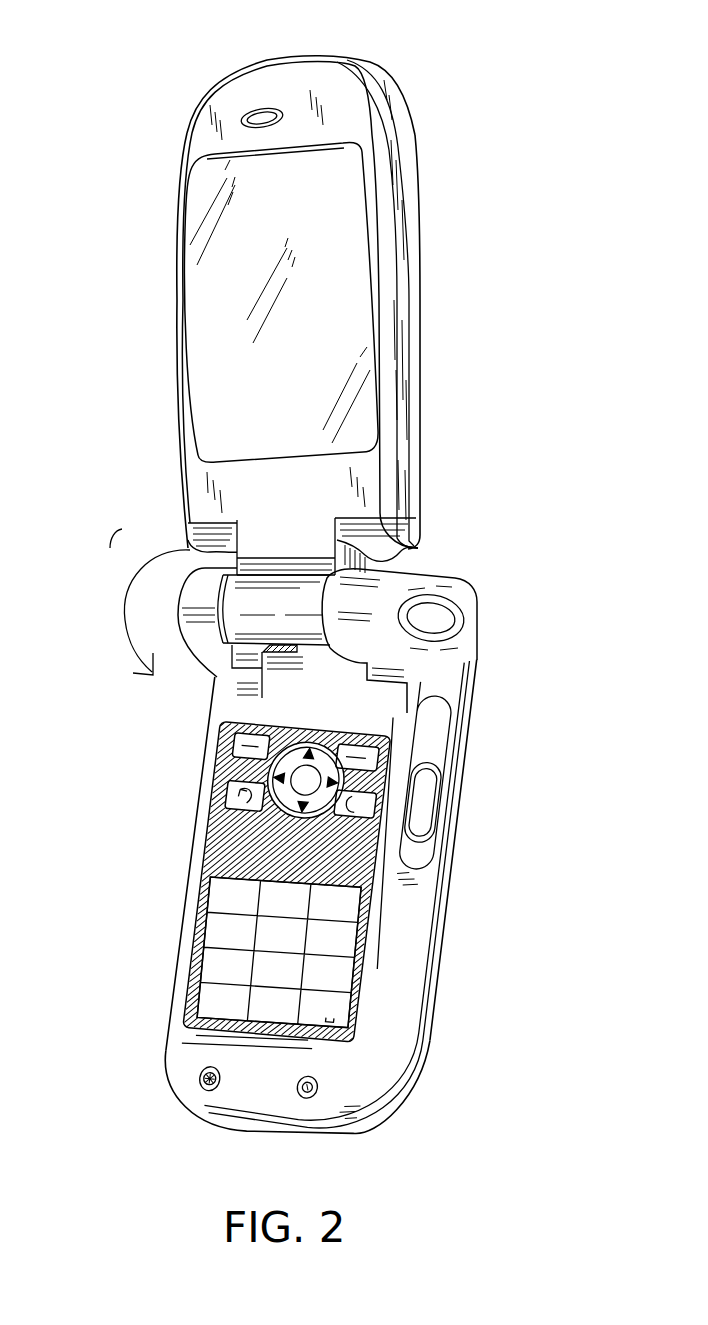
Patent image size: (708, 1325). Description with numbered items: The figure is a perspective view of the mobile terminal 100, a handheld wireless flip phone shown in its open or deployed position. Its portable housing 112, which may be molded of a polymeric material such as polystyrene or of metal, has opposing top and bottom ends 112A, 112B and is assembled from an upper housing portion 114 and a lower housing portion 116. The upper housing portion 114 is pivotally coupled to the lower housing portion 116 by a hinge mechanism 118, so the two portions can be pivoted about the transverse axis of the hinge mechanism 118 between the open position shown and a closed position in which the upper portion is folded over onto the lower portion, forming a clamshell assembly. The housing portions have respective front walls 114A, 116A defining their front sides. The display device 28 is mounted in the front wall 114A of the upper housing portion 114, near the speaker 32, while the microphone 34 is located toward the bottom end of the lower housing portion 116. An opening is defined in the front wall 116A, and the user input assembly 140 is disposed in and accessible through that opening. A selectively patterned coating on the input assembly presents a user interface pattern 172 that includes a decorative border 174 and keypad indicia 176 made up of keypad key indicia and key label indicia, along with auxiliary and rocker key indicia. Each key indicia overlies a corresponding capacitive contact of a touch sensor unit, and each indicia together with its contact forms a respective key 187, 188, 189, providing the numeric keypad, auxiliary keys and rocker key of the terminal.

The mobile terminal 100 is at (510, 29).
The portable housing 112 is at (430, 396).
The top end 112A is at (262, 66).
The bottom end 112B is at (255, 1120).
The upper housing portion 114 is at (405, 186).
The front wall 114A is at (194, 478).
The display device 28 is at (362, 275).
The speaker 32 is at (278, 110).
The hinge mechanism 118 is at (240, 623).
The lower housing portion 116 is at (375, 1088).
The front wall 116A is at (230, 1086).
The microphone 34 is at (308, 1098).
The user input assembly 140 is at (187, 832).
The user interface pattern 172 is at (175, 909).
The keypad indicia 176 is at (188, 992).
The decorative border 174 is at (385, 856).
The key 187 is at (338, 980).
The key 188 is at (372, 812).
The key 189 is at (330, 740).